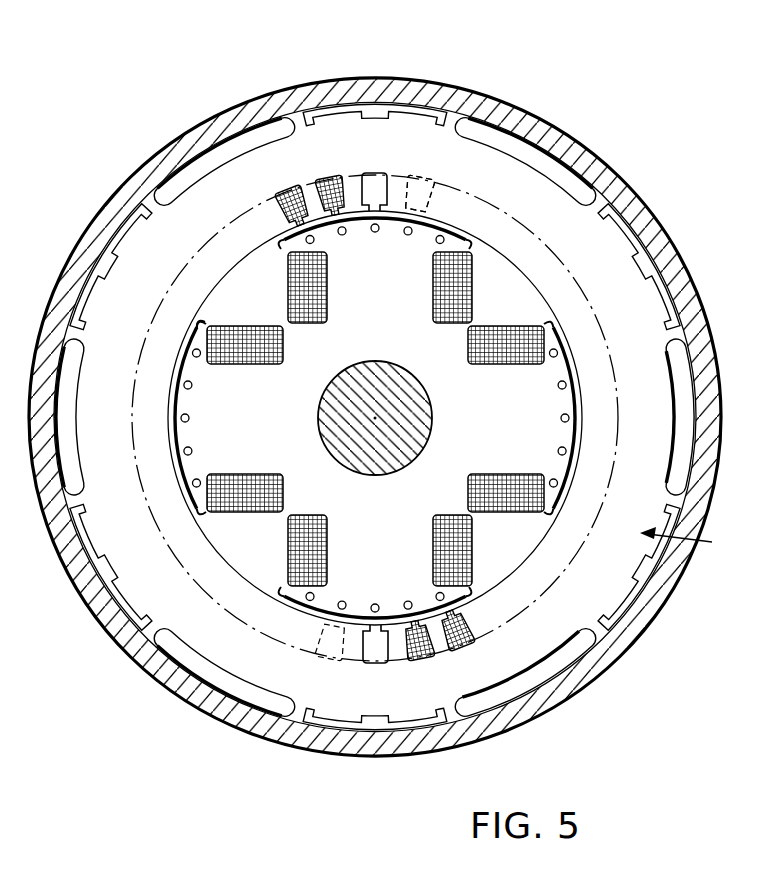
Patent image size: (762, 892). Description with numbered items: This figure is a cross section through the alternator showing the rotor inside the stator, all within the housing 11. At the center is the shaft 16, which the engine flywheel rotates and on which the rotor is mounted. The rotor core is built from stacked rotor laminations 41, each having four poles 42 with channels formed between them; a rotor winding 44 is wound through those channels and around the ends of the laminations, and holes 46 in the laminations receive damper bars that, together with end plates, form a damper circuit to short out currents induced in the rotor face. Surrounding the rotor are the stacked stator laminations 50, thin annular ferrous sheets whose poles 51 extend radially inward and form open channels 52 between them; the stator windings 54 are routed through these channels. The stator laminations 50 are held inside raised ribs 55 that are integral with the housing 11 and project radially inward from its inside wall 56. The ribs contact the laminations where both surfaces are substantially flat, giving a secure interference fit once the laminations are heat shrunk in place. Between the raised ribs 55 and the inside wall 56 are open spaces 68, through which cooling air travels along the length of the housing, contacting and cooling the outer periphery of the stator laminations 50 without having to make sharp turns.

The housing 11 is at (410, 78).
The shaft 16 is at (414, 411).
The rotor lamination 41 is at (201, 321).
The poles 42 is at (180, 472).
The rotor winding 44 is at (328, 297).
The holes 46 is at (414, 229).
The stator lamination 50 is at (695, 539).
The poles 51 is at (434, 642).
The channels 52 is at (368, 652).
The stator windings 54 is at (463, 622).
The raised ribs 55 is at (318, 112).
The inside wall 56 is at (190, 672).
The open spaces 68 is at (198, 166).